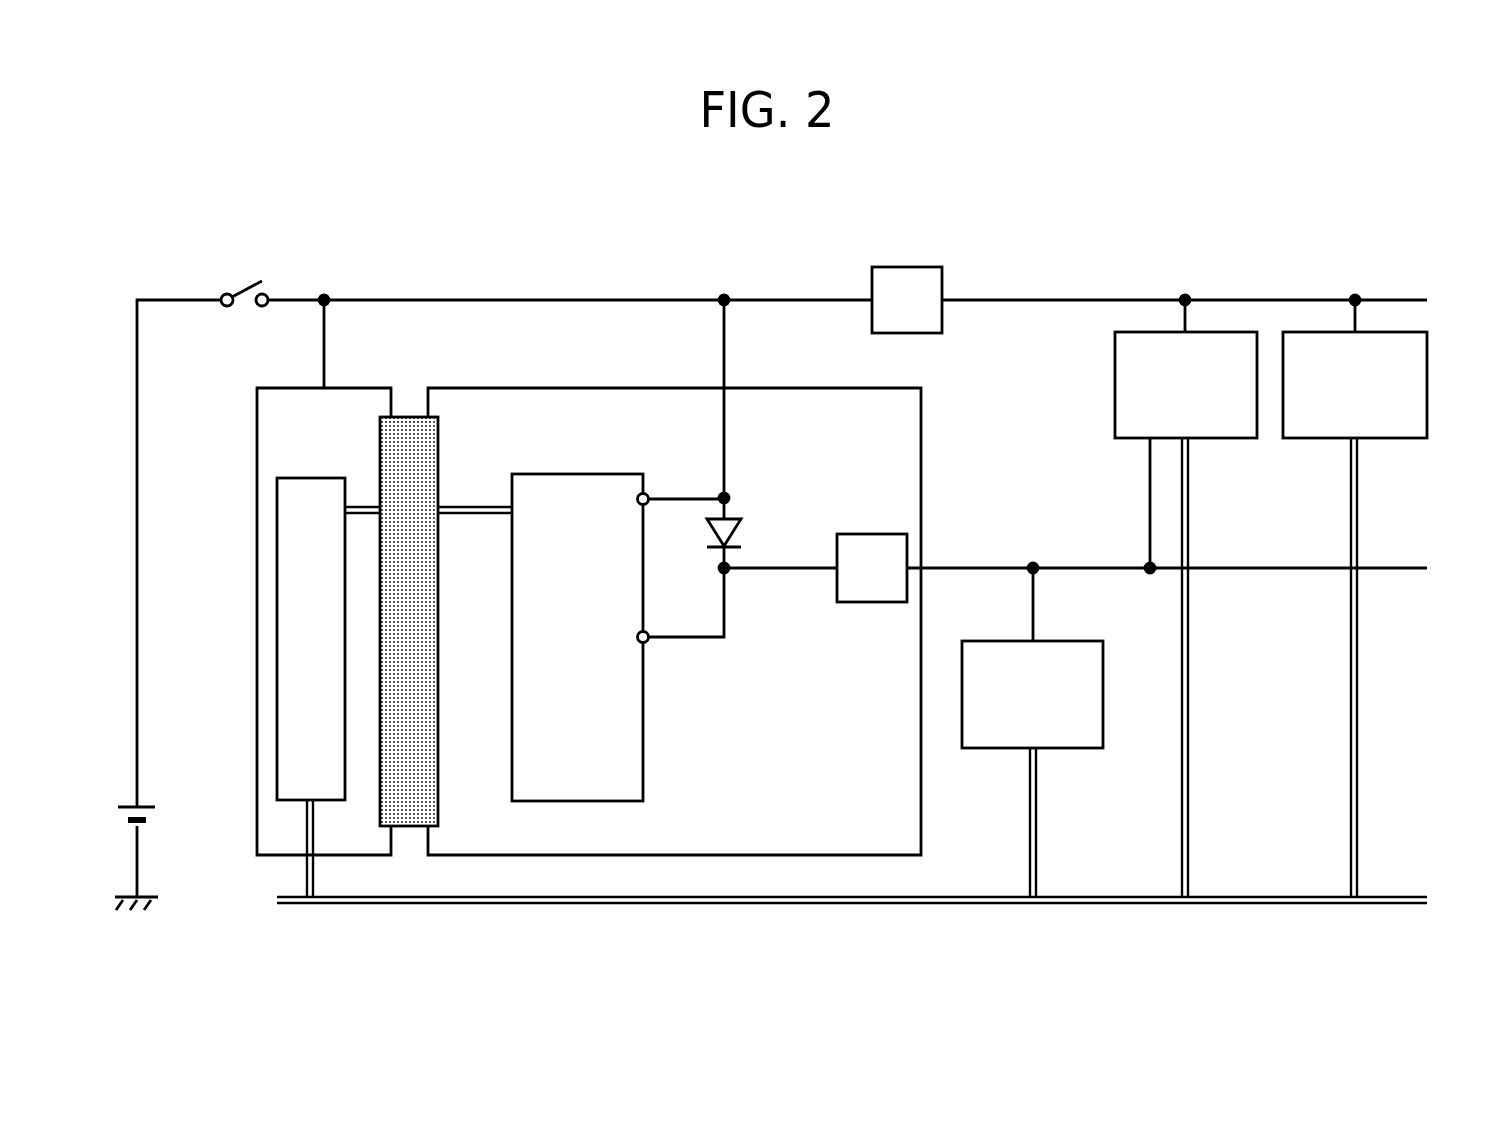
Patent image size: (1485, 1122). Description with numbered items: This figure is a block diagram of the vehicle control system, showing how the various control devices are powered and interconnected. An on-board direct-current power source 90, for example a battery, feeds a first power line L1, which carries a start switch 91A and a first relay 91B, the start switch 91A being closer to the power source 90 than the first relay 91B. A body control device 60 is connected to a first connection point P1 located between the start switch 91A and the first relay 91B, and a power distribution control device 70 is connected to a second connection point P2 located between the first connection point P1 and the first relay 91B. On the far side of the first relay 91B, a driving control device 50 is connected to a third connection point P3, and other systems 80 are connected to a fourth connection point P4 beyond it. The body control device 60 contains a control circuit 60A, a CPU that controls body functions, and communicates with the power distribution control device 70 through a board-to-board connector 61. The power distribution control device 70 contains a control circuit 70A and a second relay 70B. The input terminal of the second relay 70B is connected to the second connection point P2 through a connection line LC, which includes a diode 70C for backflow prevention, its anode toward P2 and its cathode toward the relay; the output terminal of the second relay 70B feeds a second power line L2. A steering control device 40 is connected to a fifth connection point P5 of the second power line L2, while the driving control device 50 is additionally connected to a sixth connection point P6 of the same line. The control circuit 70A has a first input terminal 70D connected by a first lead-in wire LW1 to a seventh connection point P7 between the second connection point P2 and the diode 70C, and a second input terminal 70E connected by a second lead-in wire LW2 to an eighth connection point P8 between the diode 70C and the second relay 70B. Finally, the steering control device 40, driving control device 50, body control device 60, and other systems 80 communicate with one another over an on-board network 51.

The first power line L1 is at (137, 348).
The start switch 91A is at (243, 290).
The first connection point P1 is at (326, 298).
The second connection point P2 is at (723, 298).
The first relay 91B is at (918, 267).
The third connection point P3 is at (1184, 298).
The fourth connection point P4 is at (1354, 298).
The power distribution control device 70 is at (535, 388).
The body control device 60 is at (257, 445).
The control circuit 60A is at (310, 478).
The board-to-board connector 61 is at (440, 593).
The control circuit 70A is at (577, 474).
The first input terminal 70D is at (638, 501).
The second input terminal 70E is at (638, 636).
The first lead-in wire LW1 is at (688, 498).
The second lead-in wire LW2 is at (690, 640).
The connection line LC is at (724, 470).
The seventh connection point P7 is at (730, 497).
The diode 70C is at (738, 532).
The eighth connection point P8 is at (728, 571).
The second relay 70B is at (860, 602).
The second power line L2 is at (1327, 566).
The fifth connection point P5 is at (1032, 566).
The sixth connection point P6 is at (1148, 566).
The driving control device 50 is at (1208, 440).
The other systems 80 is at (1375, 440).
The steering control device 40 is at (1055, 750).
The on-board network 51 is at (1359, 818).
The direct-current power source 90 is at (150, 806).